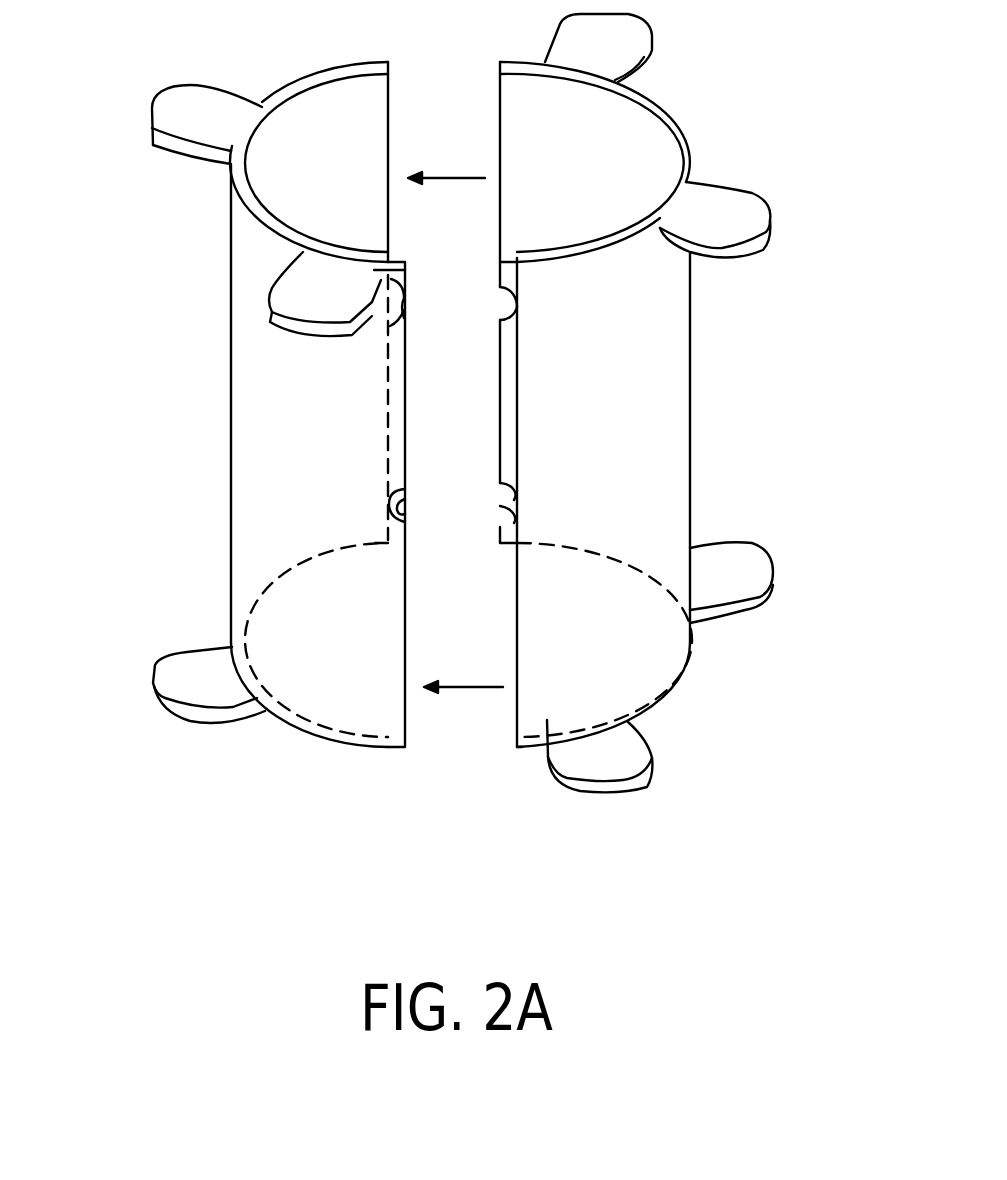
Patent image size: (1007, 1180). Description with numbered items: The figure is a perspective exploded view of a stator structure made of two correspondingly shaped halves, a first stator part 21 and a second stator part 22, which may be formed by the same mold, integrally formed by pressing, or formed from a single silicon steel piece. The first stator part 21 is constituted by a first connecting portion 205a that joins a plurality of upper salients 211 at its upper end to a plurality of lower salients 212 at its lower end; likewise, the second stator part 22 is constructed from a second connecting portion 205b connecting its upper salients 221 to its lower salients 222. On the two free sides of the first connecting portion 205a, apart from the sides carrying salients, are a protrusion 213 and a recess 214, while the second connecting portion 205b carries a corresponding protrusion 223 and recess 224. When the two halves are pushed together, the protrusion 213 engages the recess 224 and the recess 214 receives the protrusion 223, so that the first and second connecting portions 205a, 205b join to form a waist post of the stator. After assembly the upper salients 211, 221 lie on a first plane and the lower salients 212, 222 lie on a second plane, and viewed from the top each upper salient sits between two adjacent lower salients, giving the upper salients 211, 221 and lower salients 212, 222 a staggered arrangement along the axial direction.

The first stator part 21 is at (665, 445).
The second stator part 22 is at (265, 442).
The first connecting portion 205a is at (670, 355).
The second connecting portion 205b is at (250, 357).
The upper salients 211 is at (756, 208).
The lower salients 212 is at (632, 782).
The protrusion 213 is at (502, 530).
The recess 214 is at (500, 301).
The upper salients 221 is at (168, 110).
The lower salients 222 is at (163, 672).
The protrusion 223 is at (402, 318).
The recess 224 is at (398, 502).